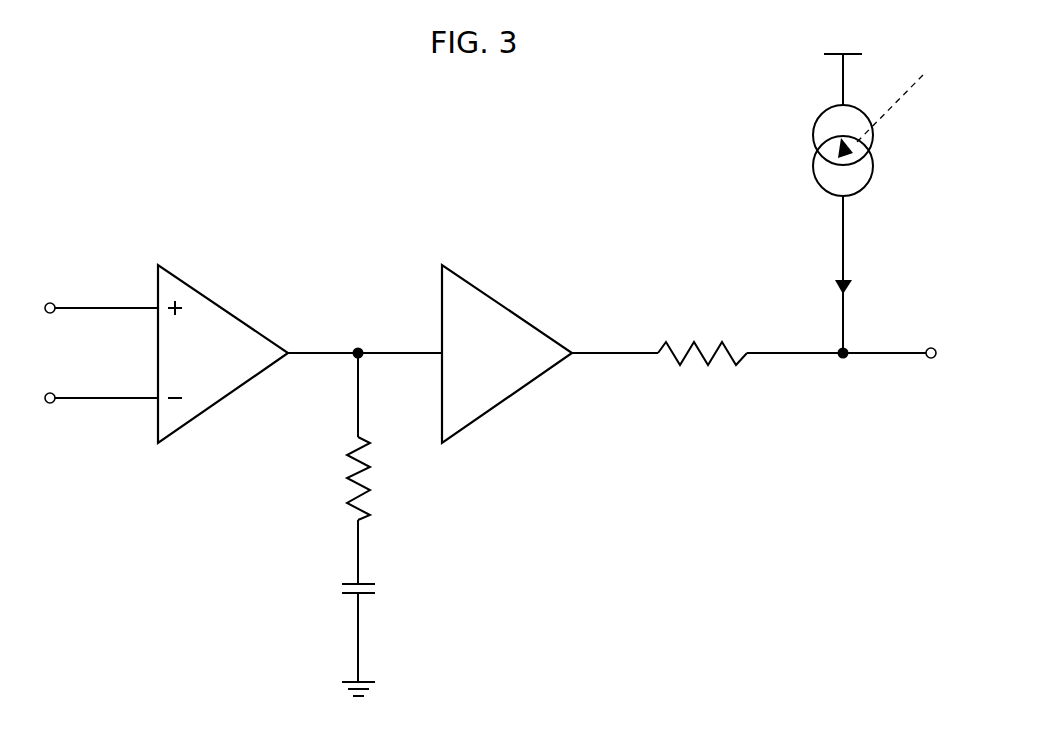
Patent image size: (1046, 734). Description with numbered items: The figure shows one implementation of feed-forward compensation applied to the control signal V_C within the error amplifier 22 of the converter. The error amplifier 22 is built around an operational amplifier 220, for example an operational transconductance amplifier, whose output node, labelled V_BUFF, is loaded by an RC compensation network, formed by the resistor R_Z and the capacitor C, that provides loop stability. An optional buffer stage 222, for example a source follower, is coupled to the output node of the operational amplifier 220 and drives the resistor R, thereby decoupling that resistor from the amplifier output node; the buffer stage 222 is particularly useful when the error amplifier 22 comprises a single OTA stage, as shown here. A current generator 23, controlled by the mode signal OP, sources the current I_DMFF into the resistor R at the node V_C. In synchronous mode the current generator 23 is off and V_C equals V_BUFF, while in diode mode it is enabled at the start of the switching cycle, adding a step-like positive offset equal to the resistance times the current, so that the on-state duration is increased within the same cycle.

The error amplifier 22 is at (280, 216).
The current generator 23 is at (799, 149).
The operational amplifier 220 is at (240, 378).
The buffer stage 222 is at (513, 378).